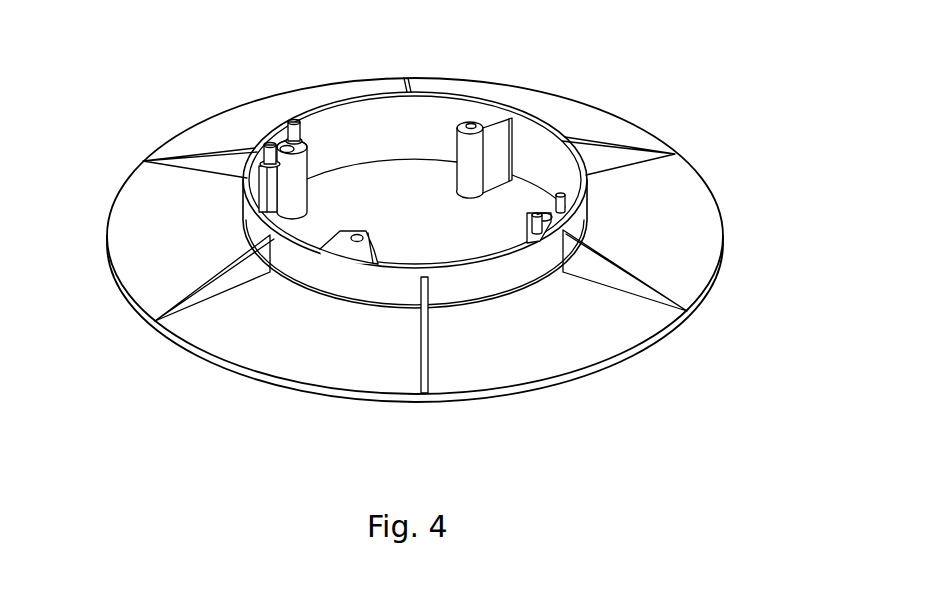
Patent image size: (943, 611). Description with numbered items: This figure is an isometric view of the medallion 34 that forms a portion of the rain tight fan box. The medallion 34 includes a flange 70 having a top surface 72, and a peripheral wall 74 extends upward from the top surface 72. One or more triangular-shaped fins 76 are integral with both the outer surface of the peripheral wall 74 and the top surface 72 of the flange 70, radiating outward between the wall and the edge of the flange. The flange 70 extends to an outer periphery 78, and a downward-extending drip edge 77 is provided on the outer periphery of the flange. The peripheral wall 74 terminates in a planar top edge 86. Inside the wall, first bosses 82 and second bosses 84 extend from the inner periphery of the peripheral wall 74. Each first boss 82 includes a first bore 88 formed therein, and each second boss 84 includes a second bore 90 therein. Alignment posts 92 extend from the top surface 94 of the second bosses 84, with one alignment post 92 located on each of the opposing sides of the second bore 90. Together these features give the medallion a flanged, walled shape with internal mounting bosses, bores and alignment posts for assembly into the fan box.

The medallion 34 is at (80, 98).
The flange 70 is at (693, 268).
The top surface 72 is at (666, 226).
The peripheral wall 74 is at (544, 120).
The triangular-shaped fins 76 is at (613, 275).
The drip edge 77 is at (270, 387).
The outer periphery 78 is at (602, 367).
The first bosses 82 is at (468, 187).
The second bosses 84 is at (300, 204).
The planar top edge 86 is at (360, 100).
The first bore 88 is at (470, 124).
The second bore 90 is at (281, 140).
The alignment posts 92 is at (558, 194).
The top surface of the second bosses 94 is at (551, 238).